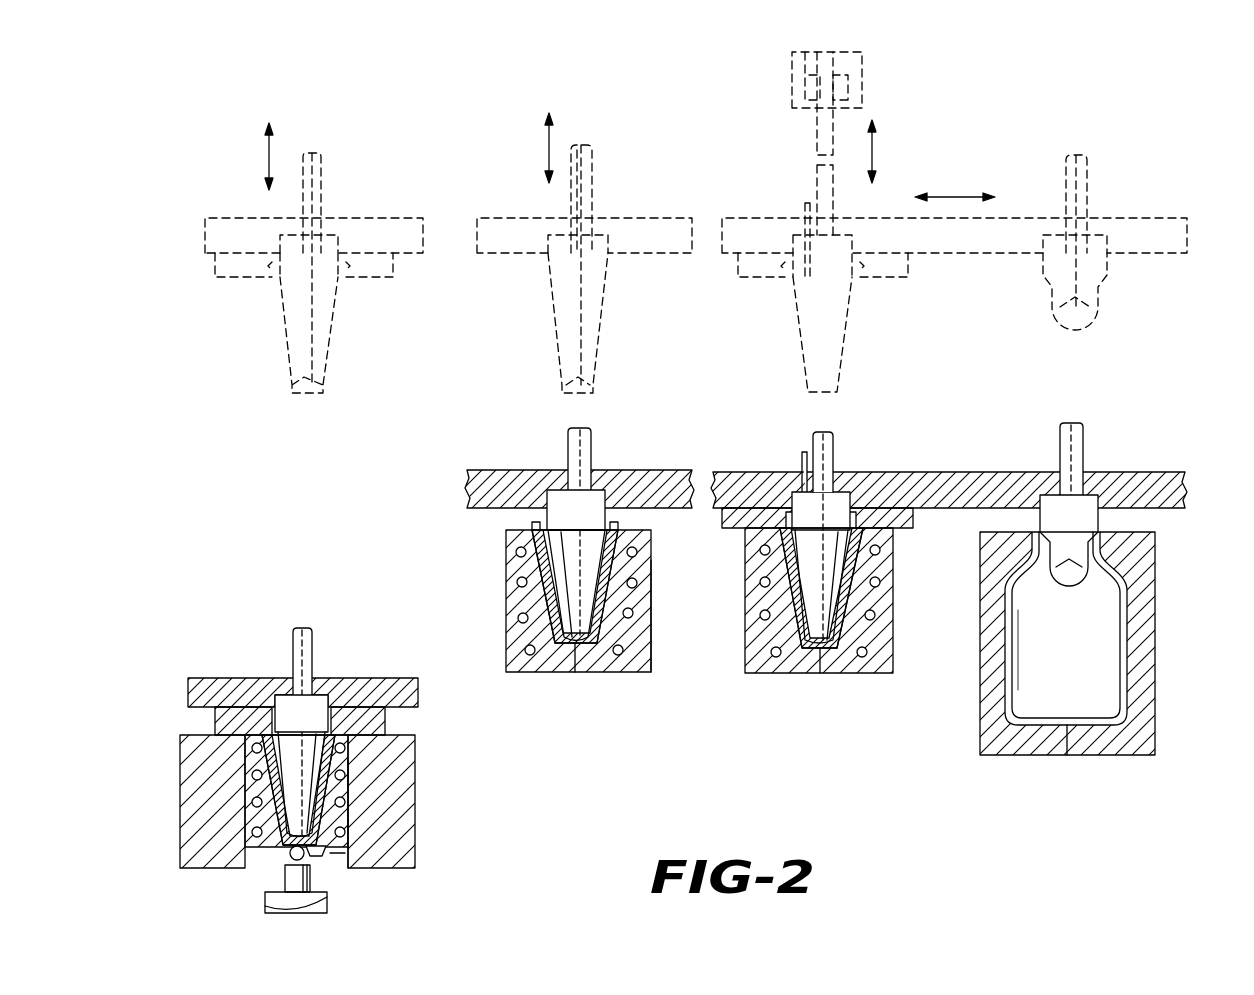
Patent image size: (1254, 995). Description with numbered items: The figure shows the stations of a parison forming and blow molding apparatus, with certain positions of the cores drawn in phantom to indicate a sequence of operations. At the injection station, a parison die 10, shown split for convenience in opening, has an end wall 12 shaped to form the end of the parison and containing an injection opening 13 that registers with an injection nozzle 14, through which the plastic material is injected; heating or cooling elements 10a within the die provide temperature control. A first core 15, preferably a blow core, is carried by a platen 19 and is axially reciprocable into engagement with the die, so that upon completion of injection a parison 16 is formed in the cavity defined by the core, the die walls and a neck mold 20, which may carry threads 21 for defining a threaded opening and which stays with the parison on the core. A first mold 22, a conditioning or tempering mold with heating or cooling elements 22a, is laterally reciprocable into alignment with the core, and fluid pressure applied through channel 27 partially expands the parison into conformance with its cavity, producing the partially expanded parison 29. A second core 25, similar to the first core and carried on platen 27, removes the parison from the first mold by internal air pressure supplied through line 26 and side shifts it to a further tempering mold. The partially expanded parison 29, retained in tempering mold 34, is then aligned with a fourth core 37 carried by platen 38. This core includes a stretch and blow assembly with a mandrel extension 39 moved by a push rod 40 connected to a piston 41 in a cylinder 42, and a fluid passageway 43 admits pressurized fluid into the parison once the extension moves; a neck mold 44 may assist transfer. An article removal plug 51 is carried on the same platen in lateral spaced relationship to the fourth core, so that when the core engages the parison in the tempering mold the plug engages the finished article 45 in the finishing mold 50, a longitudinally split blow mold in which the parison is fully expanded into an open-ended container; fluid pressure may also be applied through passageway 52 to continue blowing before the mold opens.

The parison die 10 is at (240, 790).
The heating or cooling elements 10a is at (348, 792).
The end wall 12 is at (290, 858).
The injection opening 13 is at (318, 856).
The injection nozzle 14 is at (268, 905).
The first core 15 is at (296, 332).
The parison 16 is at (312, 757).
The platen 19 is at (241, 218).
The neck mold 20 is at (228, 277).
The threads 21 is at (320, 184).
The first mold 22 is at (506, 600).
The heating or cooling elements 22a is at (642, 588).
The second core 25 is at (600, 311).
The line 26 is at (578, 343).
The platen 27 is at (676, 228).
The partially expanded parison 29 is at (535, 545).
The tempering mold 34 is at (752, 627).
The fourth core 37 is at (832, 331).
The platen 38 is at (970, 245).
The mandrel extension 39 is at (816, 178).
The push rod 40 is at (821, 130).
The piston 41 is at (850, 62).
The cylinder 42 is at (796, 82).
The fluid passageway 43 is at (805, 214).
The neck mold 44 is at (755, 280).
The finished article 45 is at (1125, 598).
The finishing mold 50 is at (1145, 655).
The article removal plug 51 is at (1098, 300).
The passageway 52 is at (1087, 188).